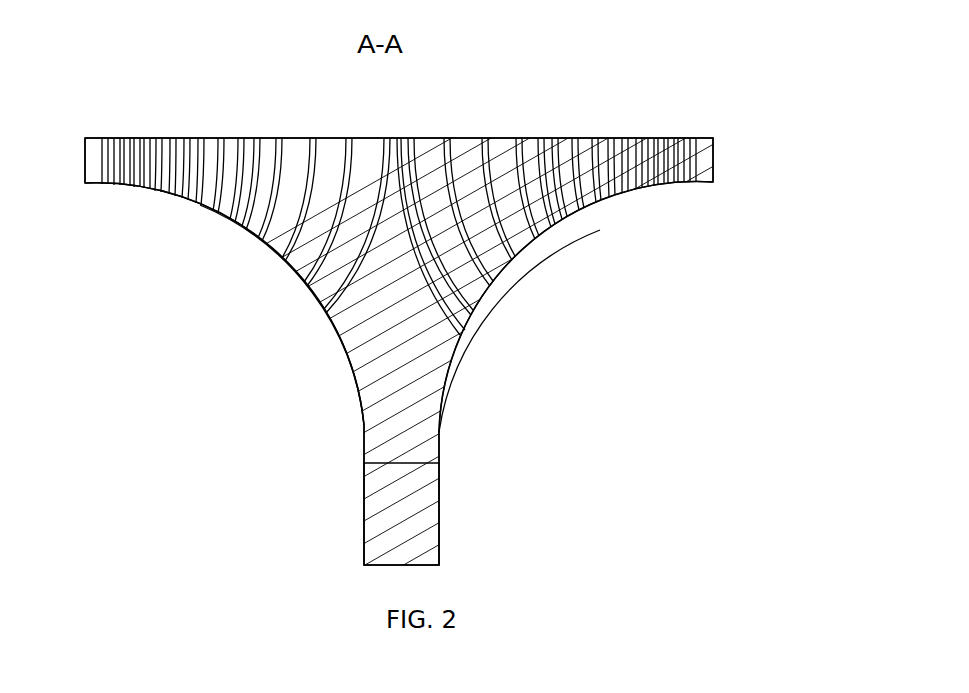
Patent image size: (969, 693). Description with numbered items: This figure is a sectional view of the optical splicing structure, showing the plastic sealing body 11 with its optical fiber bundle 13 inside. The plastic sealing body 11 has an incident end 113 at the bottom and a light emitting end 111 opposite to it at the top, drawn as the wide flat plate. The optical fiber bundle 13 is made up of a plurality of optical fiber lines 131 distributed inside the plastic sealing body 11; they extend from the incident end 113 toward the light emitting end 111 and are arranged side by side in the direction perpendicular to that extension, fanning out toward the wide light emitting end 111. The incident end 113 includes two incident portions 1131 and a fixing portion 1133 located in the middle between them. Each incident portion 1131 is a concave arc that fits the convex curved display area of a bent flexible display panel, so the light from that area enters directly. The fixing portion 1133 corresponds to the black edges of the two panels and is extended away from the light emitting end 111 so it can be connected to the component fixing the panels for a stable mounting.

The plastic sealing body 11 is at (85, 293).
The light emitting end 111 is at (168, 150).
The incident end 113 is at (225, 383).
The incident portion 1131 is at (332, 290).
The fixing portion 1133 is at (378, 498).
The optical fiber bundle 13 is at (750, 207).
The optical fiber lines 131 is at (620, 194).